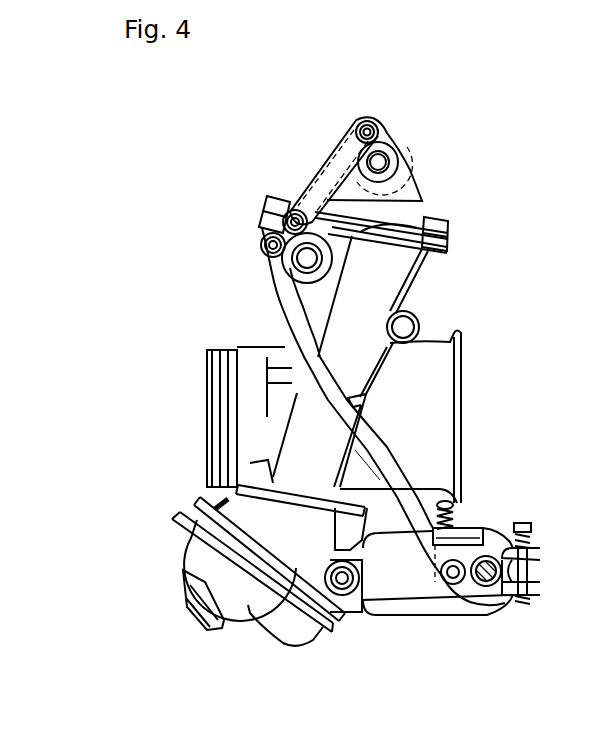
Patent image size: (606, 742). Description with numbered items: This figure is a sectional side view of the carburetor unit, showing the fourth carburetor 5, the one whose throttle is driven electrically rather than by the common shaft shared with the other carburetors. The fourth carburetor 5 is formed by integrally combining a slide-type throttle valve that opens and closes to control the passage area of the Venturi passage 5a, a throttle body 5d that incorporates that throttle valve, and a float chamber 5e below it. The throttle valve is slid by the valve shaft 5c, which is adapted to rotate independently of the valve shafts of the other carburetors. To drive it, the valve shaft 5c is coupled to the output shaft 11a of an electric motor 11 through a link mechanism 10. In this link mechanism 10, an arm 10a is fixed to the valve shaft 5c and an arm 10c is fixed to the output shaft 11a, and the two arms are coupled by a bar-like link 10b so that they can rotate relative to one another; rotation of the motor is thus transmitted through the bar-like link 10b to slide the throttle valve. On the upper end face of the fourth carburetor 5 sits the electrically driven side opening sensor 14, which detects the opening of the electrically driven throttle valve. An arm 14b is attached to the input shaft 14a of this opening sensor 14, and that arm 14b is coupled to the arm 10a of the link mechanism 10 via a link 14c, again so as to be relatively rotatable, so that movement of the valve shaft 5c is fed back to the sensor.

The fourth carburetor 5 is at (436, 192).
The Venturi passage 5a is at (447, 450).
The valve shaft 5c is at (290, 257).
The throttle body 5d is at (462, 370).
The float chamber 5e is at (313, 647).
The link mechanism 10 is at (265, 325).
The arm 10a is at (262, 211).
The bar-like link 10b is at (367, 467).
The arm 10c is at (467, 548).
The electric motor 11 is at (510, 610).
The output shaft 11a is at (480, 585).
The electrically driven side opening sensor 14 is at (413, 145).
The input shaft 14a is at (385, 158).
The arm 14b is at (380, 127).
The link 14c is at (337, 153).